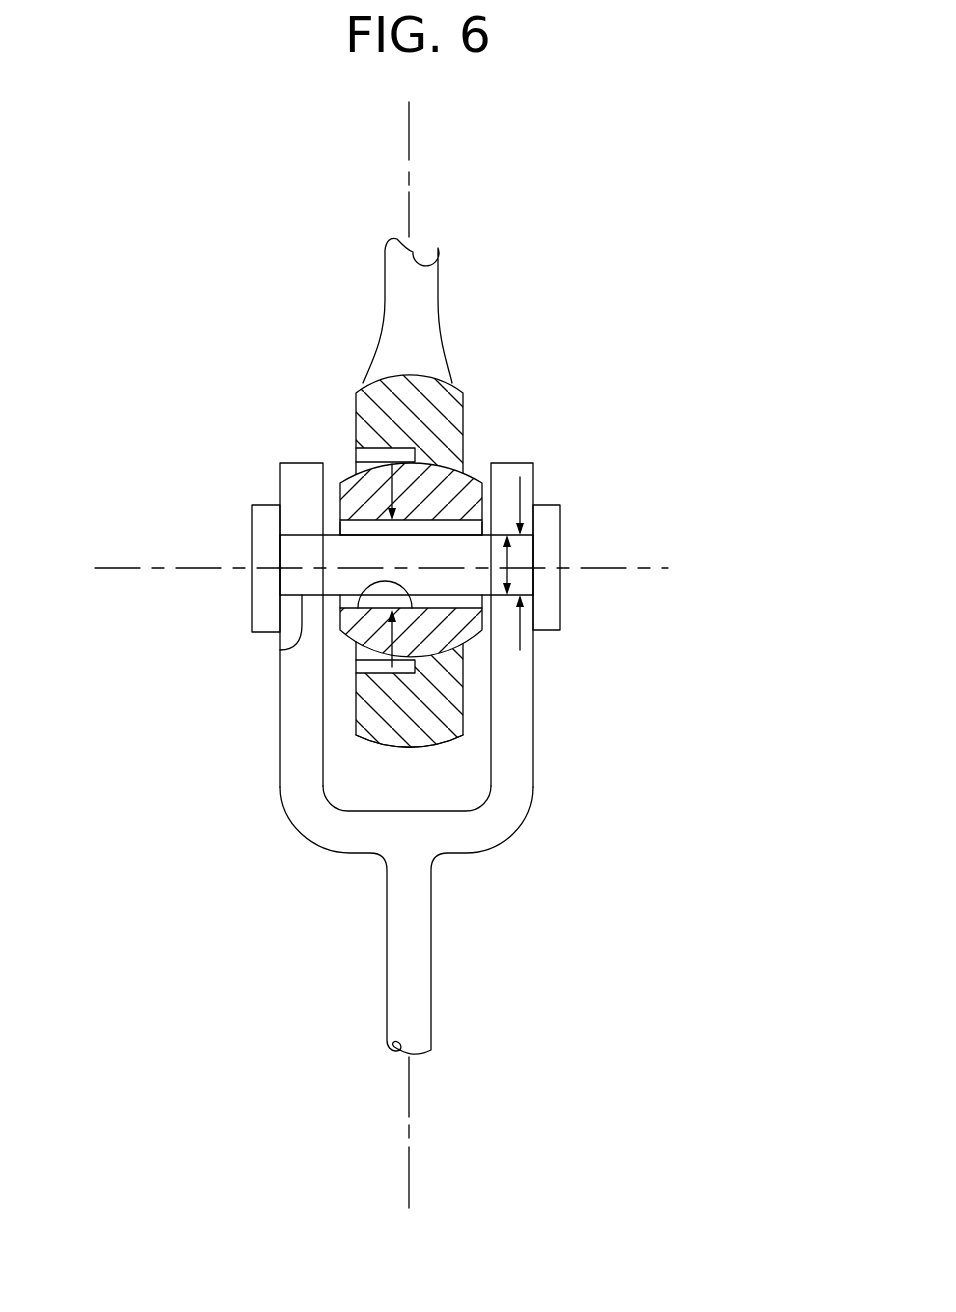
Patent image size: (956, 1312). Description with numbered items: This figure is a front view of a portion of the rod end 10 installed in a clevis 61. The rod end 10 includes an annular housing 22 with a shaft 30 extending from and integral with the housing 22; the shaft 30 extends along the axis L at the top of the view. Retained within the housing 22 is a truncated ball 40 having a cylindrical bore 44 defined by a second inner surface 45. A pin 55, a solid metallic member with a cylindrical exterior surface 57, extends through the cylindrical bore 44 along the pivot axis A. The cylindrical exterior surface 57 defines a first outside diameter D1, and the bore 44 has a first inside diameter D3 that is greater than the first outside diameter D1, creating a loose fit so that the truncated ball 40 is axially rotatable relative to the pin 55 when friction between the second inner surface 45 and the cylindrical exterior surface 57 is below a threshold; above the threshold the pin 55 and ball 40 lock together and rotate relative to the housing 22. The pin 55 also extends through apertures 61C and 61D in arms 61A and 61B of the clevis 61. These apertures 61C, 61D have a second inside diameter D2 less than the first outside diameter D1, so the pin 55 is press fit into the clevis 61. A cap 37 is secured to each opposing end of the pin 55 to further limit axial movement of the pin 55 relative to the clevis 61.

The axis line L is at (409, 158).
The pivot axis A is at (132, 568).
The shaft 30 is at (446, 275).
The rod end 10 is at (473, 408).
The cylindrical exterior surface 57 is at (447, 530).
The first inside diameter D3 is at (377, 485).
The cylindrical bore 44 is at (337, 525).
The pin 55 is at (290, 553).
The cap 37 is at (265, 593).
The second inside diameter D2 is at (522, 482).
The first outside diameter D1 is at (510, 557).
The aperture 61D is at (522, 640).
The second inner surface 45 is at (358, 612).
The truncated ball 40 is at (473, 643).
The annular housing 22 is at (356, 724).
The clevis 61 is at (398, 758).
The arm 61A is at (300, 670).
The arm 61B is at (522, 700).
The aperture 61C is at (280, 650).